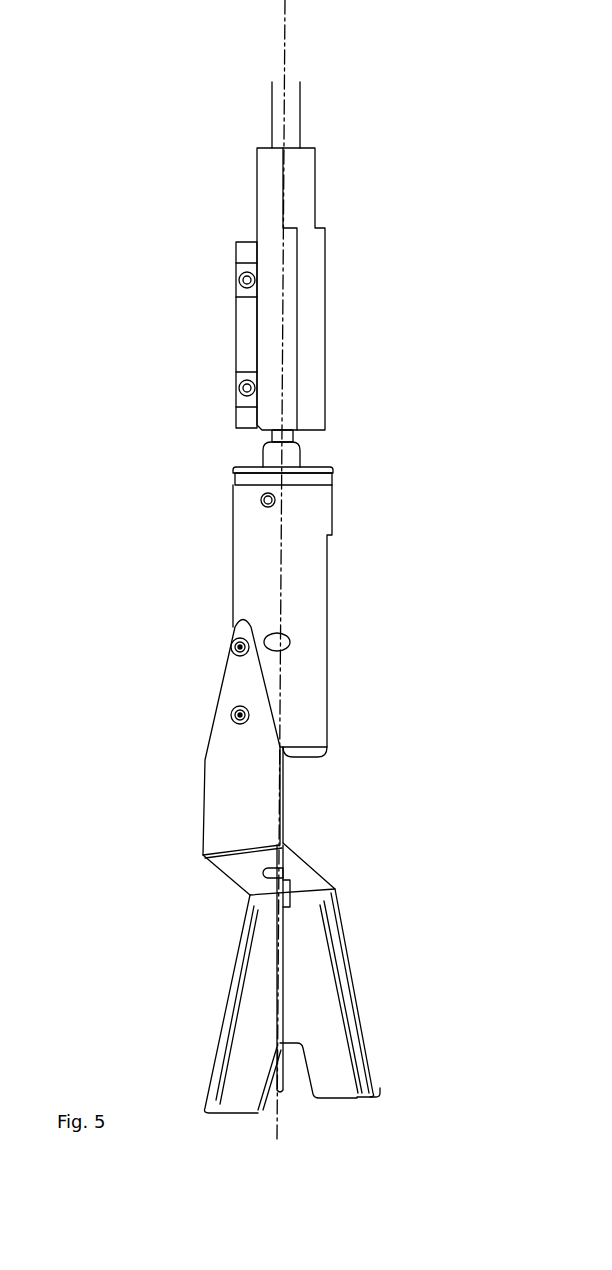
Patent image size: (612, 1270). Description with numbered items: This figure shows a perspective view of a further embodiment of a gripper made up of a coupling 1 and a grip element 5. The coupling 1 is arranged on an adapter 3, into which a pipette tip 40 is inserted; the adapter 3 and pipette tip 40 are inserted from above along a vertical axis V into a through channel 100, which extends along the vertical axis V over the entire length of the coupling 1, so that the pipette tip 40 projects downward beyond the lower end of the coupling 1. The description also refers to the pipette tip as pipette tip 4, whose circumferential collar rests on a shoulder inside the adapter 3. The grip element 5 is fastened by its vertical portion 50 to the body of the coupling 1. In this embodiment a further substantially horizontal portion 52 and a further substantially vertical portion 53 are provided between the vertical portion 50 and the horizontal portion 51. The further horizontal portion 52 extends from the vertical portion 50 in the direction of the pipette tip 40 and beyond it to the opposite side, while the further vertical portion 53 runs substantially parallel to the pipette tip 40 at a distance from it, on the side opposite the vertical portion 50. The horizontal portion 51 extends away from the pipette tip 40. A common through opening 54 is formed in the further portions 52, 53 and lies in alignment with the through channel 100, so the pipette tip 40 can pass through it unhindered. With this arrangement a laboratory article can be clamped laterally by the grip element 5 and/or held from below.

The vertical axis V is at (283, 36).
The coupling 1 is at (251, 625).
The adapter 3 is at (289, 452).
The pipette tip 4 is at (415, 290).
The grip element 5 is at (257, 867).
The pipette tip 40 is at (280, 955).
The vertical portion 50 is at (267, 810).
The horizontal portion 51 is at (378, 1095).
The further horizontal portion 52 is at (300, 876).
The further vertical portion 53 is at (322, 1002).
The through opening 54 is at (285, 902).
The through channel 100 is at (288, 757).